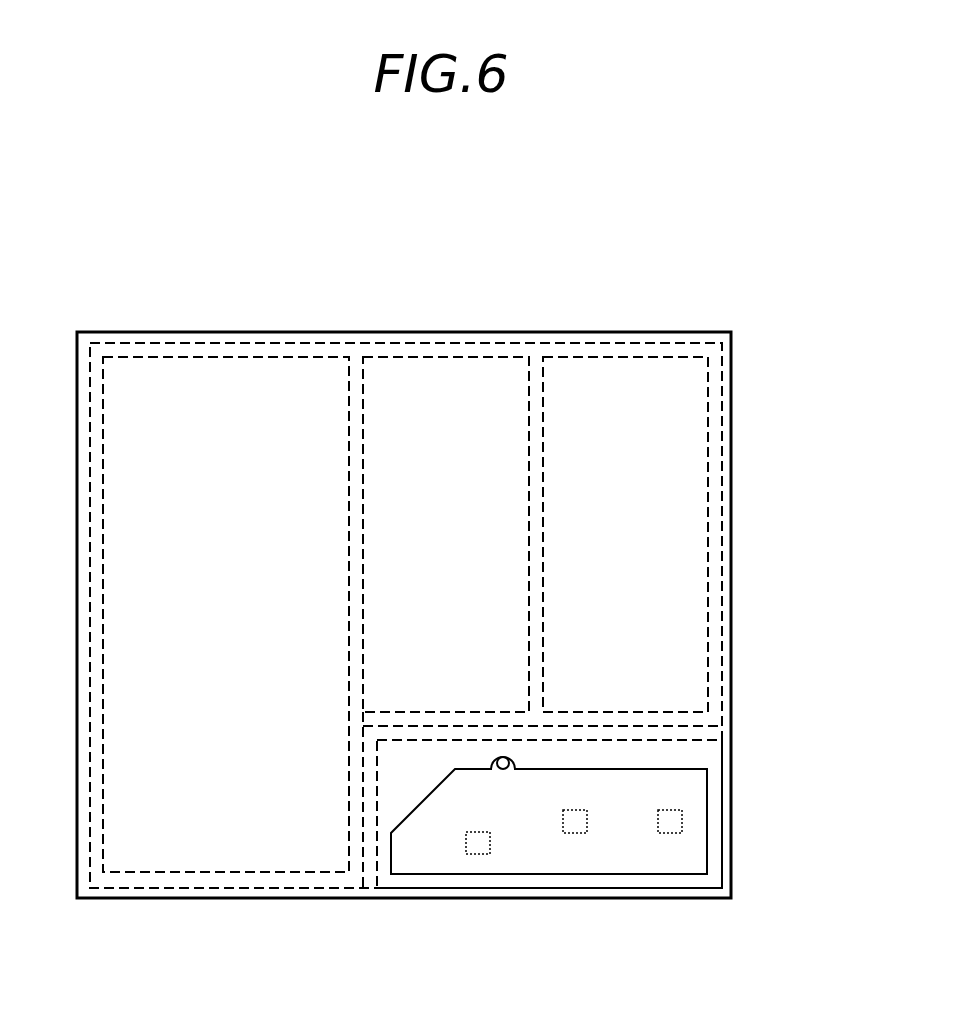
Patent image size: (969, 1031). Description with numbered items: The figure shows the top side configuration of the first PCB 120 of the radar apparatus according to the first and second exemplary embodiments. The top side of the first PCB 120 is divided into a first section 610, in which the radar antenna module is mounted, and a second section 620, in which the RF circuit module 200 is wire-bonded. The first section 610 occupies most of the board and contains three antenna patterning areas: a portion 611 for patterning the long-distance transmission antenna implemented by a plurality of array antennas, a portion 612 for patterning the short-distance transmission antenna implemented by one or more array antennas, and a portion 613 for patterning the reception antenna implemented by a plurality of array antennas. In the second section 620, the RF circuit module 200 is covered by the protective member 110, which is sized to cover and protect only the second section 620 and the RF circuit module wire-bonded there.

The protective member 110 is at (707, 828).
The first printed circuit board 120 is at (731, 458).
The RF circuit module 200 is at (478, 854).
The first section 610 is at (722, 603).
The portion for patterning the long-distance transmission antenna 611 is at (312, 356).
The portion for patterning the short-distance transmission antenna 612 is at (493, 356).
The portion for patterning the reception antenna 613 is at (670, 356).
The second section 620 is at (723, 777).